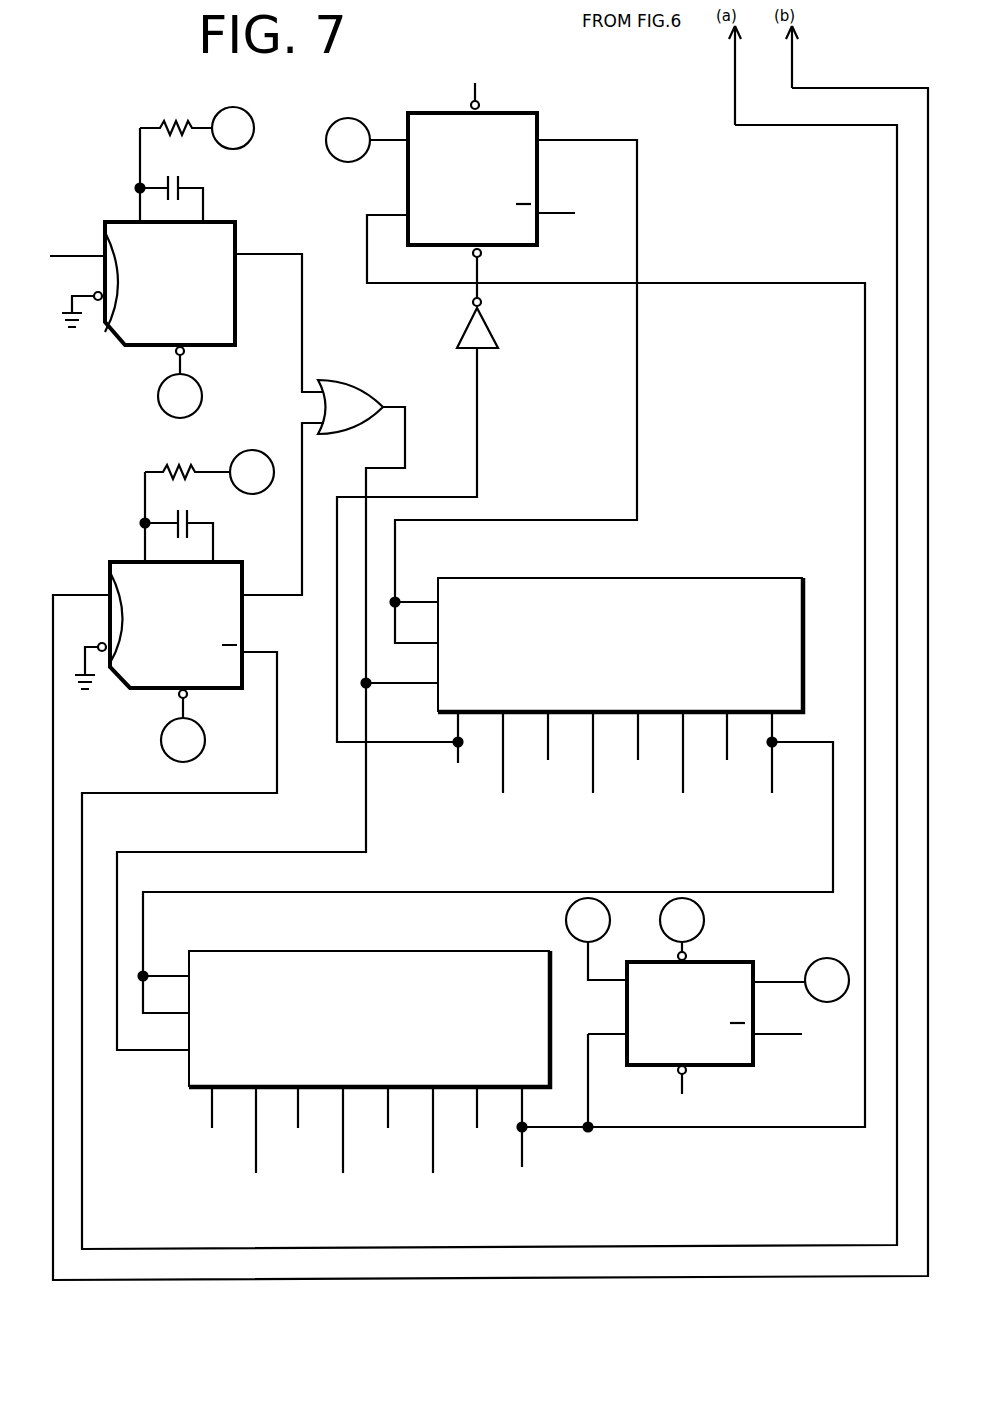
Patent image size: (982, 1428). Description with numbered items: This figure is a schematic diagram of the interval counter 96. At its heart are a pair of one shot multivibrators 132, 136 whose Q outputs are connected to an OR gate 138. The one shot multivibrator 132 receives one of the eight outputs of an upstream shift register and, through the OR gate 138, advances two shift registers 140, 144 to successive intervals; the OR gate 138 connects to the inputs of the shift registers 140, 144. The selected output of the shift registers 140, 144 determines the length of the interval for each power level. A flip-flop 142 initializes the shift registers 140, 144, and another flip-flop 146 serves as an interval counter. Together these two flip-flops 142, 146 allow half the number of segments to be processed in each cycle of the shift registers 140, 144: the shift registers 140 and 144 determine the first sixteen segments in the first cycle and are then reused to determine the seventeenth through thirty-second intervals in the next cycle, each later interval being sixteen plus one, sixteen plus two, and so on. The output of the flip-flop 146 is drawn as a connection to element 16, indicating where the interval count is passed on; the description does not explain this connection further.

The interval counter 96 is at (416, 82).
The one shot multivibrator 132 is at (125, 562).
The one shot multivibrator 136 is at (117, 222).
The OR gate 138 is at (355, 380).
The shift register 140 is at (713, 578).
The flip-flop 142 is at (528, 113).
The shift register 144 is at (383, 951).
The flip-flop 146 is at (741, 962).
The output connection to element 16 is at (827, 980).